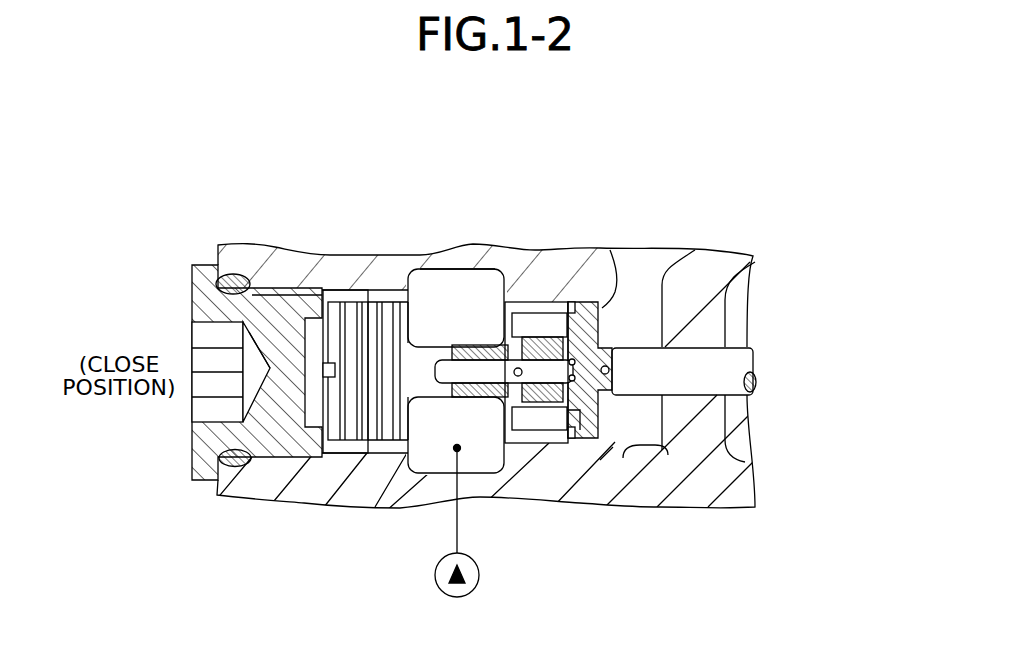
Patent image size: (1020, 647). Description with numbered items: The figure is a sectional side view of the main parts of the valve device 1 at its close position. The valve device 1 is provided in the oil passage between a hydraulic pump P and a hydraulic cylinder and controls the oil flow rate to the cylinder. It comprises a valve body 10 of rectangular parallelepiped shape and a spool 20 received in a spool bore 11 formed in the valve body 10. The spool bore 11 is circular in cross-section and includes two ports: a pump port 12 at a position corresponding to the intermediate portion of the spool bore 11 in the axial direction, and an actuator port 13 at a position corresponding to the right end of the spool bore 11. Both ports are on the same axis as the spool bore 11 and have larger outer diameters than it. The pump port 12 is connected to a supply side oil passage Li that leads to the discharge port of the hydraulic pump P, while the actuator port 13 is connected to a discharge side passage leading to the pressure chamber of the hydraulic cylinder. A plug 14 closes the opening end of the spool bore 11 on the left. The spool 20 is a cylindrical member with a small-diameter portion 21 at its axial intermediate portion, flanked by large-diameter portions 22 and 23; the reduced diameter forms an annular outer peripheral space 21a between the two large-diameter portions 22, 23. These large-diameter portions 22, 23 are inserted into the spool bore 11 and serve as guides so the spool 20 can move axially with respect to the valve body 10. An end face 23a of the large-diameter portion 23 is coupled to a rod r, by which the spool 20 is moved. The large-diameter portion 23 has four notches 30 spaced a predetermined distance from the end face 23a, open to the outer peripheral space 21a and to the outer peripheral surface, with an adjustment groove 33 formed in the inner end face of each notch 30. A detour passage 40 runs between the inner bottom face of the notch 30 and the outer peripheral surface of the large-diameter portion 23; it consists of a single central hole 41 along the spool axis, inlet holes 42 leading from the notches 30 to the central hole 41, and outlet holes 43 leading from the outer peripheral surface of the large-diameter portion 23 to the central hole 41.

The valve device 1 is at (197, 228).
The valve body 10 is at (724, 263).
The spool bore 11 is at (350, 313).
The pump port 12 is at (437, 272).
The actuator port 13 is at (662, 450).
The plug 14 is at (192, 296).
The spool 20 is at (360, 158).
The small-diameter portion 21 is at (480, 345).
The outer peripheral space 21a is at (489, 431).
The large-diameter portion 22 is at (392, 290).
The large-diameter portion 23 is at (570, 303).
The end face 23a is at (603, 308).
The notch 30 is at (598, 314).
The adjustment groove 33 is at (575, 420).
The detour passage 40 is at (613, 555).
The central hole 41 is at (482, 375).
The inlet hole 42 is at (552, 390).
The outlet hole 43 is at (580, 443).
The rod r is at (740, 360).
The hydraulic pump P is at (435, 575).
The supply side oil passage Li is at (453, 529).